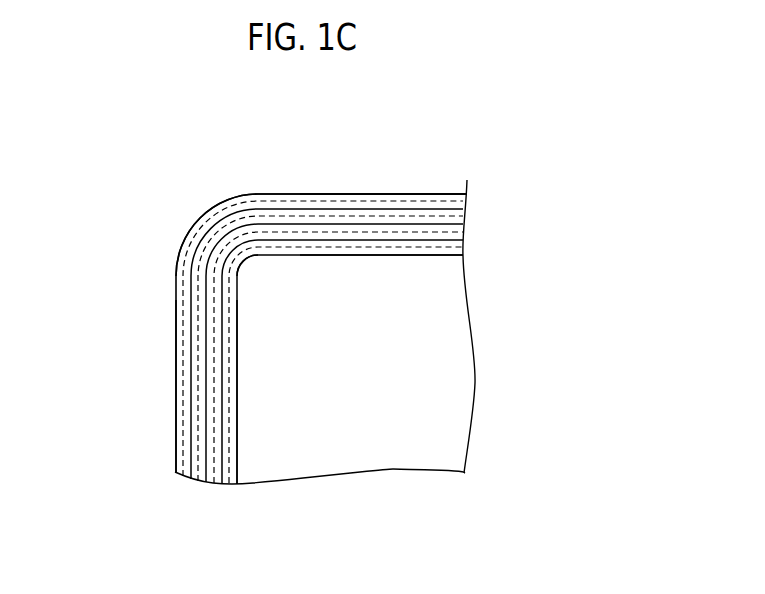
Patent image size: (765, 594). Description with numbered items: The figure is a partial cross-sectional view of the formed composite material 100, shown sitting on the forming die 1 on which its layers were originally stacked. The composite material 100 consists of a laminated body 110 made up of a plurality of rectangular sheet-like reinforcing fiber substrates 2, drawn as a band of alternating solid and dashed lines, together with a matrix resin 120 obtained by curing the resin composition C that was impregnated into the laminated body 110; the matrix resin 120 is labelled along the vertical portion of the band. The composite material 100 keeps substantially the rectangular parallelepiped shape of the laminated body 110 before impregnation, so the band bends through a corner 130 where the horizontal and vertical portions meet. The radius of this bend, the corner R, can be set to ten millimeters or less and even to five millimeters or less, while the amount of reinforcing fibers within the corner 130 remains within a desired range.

The forming die 1 is at (475, 403).
The reinforcing fiber substrate 2 is at (372, 192).
The composite material 100 is at (293, 193).
The laminated body 110 is at (417, 256).
The matrix resin 120 is at (177, 381).
The corner 130 is at (212, 215).
The corner R is at (267, 285).